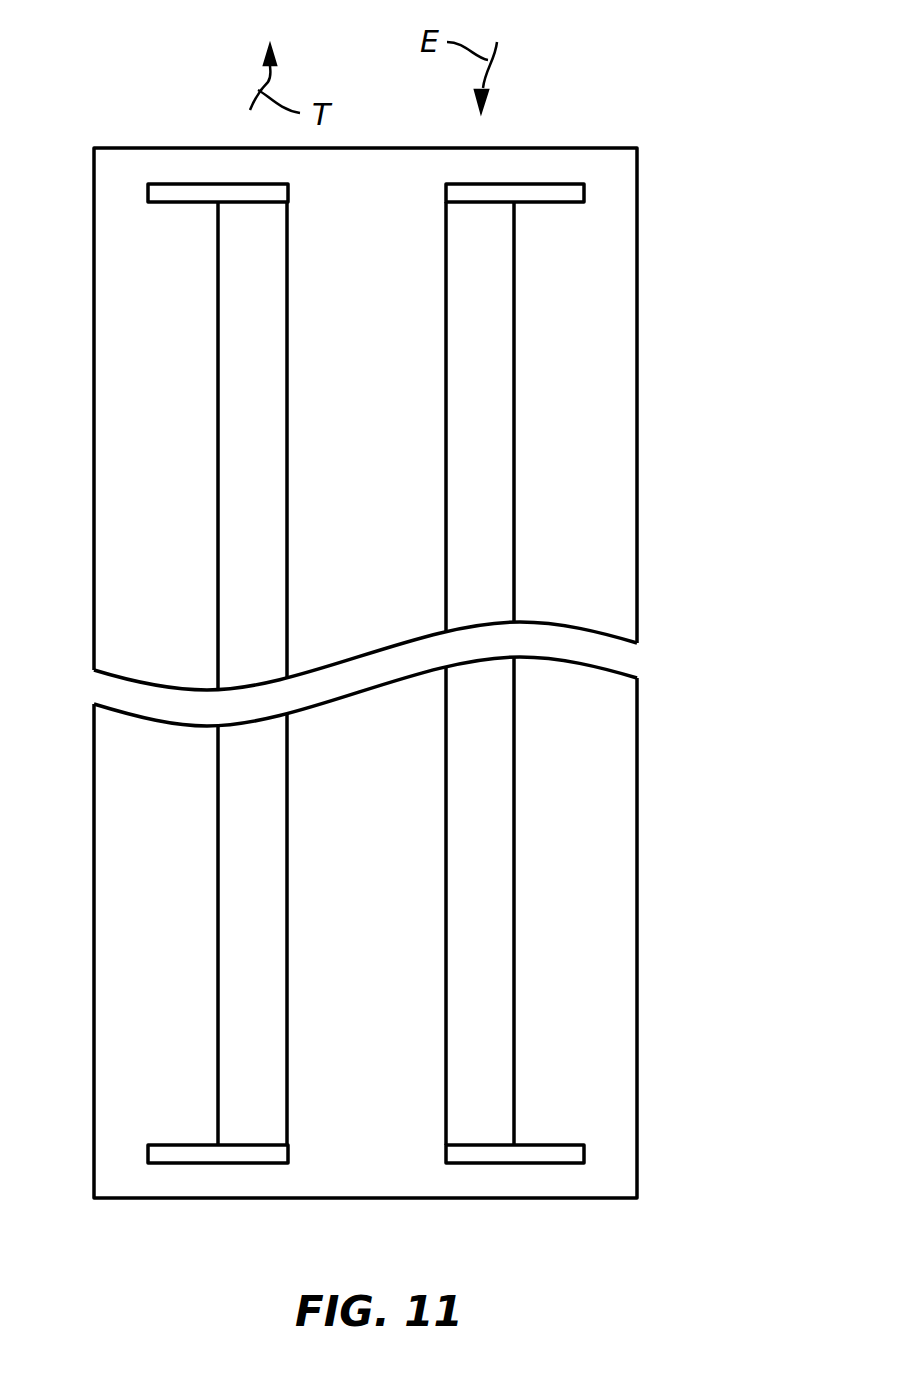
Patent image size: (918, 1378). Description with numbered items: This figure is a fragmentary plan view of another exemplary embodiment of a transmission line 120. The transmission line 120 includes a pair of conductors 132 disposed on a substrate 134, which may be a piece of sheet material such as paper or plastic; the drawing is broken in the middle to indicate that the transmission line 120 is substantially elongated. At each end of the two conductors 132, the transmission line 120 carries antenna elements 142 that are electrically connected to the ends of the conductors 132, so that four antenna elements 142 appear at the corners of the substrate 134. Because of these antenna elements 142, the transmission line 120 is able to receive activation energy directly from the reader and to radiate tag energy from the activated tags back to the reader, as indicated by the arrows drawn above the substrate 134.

The transmission line 120 is at (651, 52).
The conductors 132 is at (218, 342).
The substrate 134 is at (637, 790).
The antenna elements 142 is at (176, 184).